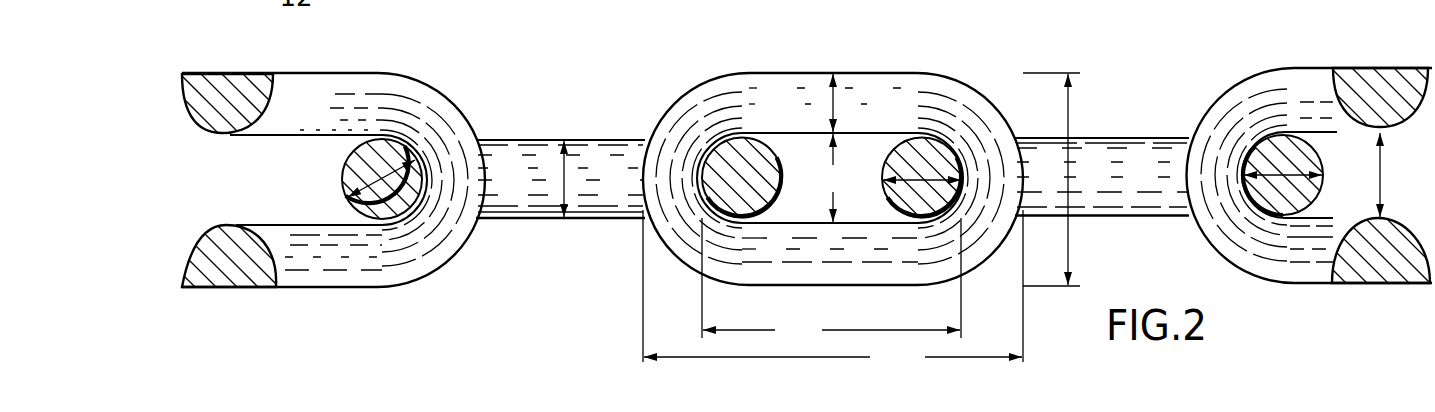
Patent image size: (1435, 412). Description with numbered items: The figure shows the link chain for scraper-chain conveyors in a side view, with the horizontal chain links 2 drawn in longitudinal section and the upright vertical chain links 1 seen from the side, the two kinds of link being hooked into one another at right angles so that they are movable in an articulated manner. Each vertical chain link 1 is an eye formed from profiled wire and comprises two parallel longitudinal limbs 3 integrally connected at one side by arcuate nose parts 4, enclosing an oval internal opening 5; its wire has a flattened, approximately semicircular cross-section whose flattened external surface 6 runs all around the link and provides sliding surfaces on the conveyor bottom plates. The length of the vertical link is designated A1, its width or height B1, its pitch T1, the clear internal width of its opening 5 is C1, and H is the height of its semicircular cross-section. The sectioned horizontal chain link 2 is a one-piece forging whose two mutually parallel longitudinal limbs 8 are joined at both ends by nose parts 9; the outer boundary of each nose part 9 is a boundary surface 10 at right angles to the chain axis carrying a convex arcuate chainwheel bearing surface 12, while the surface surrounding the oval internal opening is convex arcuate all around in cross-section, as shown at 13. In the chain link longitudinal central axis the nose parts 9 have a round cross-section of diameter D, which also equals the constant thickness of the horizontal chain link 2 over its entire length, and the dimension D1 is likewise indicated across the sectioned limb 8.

The vertical chain link 1 is at (268, 293).
The horizontal chain link 2 is at (512, 226).
The longitudinal limb 3 is at (382, 98).
The nose part 4 is at (457, 127).
The oval internal opening 5 is at (337, 213).
The flattened external surface 6 is at (450, 257).
The longitudinal limb 8 is at (593, 212).
The nose part 9 is at (394, 150).
The boundary surface 10 is at (347, 180).
The chainwheel bearing surface 12 is at (347, 162).
The convex arcuate surface 13 is at (500, 157).
The diameter D is at (386, 205).
The leg diameter D1 is at (560, 176).
The height dimension H is at (829, 97).
The clear internal width C1 is at (1393, 175).
The pitch T1 is at (831, 281).
The length A1 is at (833, 288).
The width B1 is at (1069, 247).